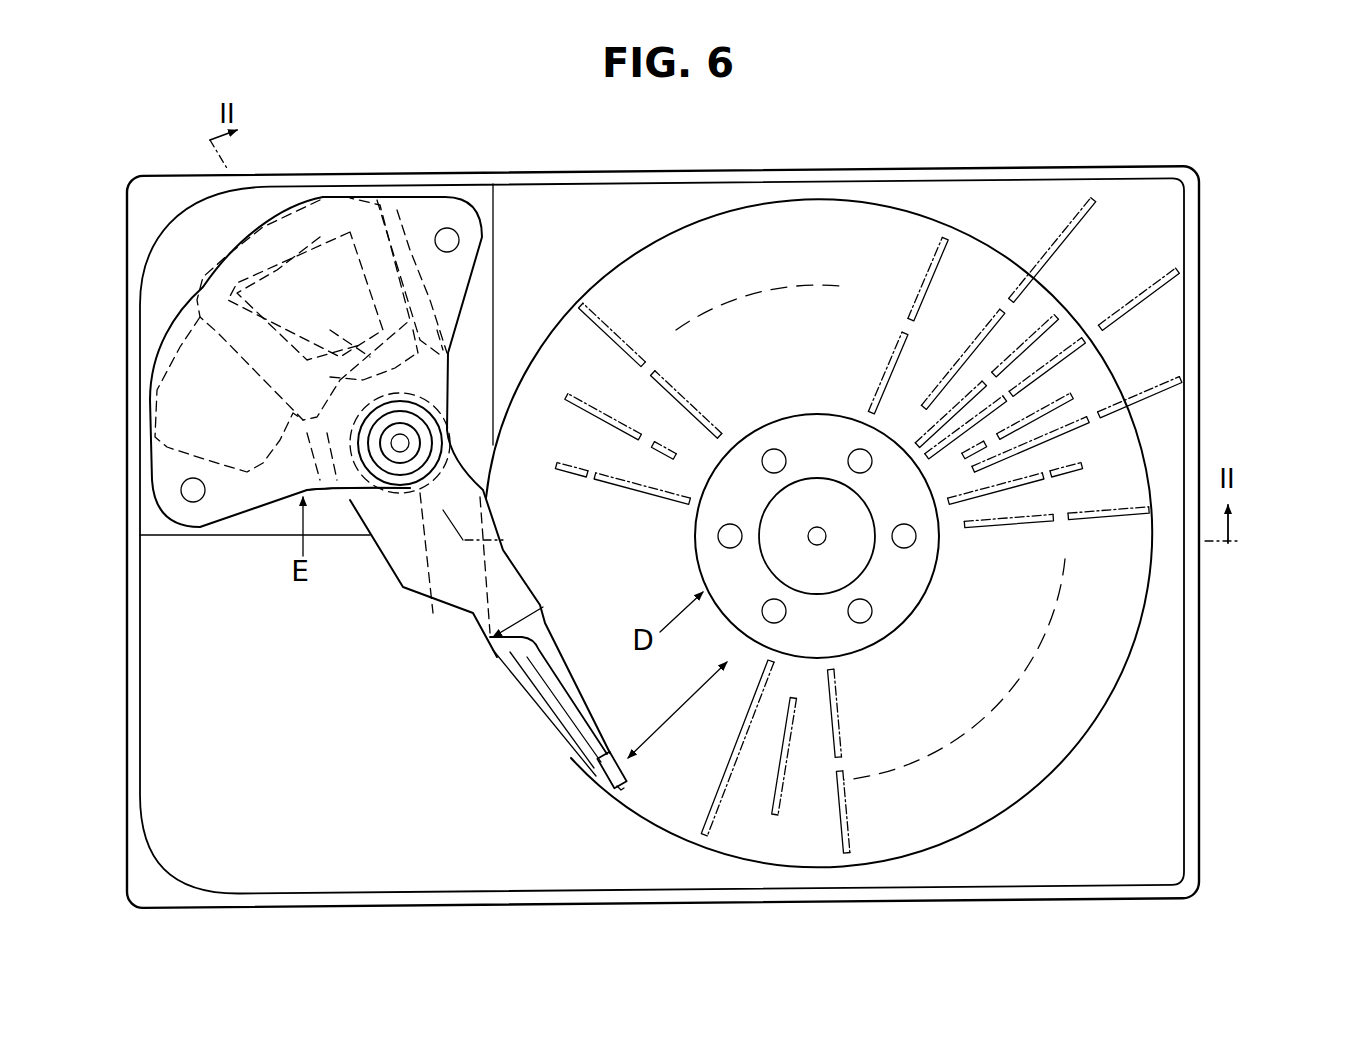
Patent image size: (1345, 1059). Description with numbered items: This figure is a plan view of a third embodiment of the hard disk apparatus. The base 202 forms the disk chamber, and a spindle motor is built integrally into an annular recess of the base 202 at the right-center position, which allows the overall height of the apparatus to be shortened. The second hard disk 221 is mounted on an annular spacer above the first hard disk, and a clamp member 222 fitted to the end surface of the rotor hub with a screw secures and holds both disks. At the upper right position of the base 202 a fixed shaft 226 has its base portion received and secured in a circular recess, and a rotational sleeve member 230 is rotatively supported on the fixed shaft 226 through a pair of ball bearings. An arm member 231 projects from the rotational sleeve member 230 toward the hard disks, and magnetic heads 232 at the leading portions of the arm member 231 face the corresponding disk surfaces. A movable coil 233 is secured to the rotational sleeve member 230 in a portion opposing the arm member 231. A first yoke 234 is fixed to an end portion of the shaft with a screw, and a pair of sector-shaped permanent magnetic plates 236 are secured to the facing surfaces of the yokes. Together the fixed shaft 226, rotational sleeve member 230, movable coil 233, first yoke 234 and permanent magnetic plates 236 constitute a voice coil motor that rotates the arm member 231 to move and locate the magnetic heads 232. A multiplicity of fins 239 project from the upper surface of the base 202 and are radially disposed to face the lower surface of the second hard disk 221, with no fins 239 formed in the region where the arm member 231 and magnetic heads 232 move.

The base 202 is at (1203, 778).
The second hard disk 221 is at (1127, 585).
The clamp member 222 is at (893, 607).
The fixed shaft 226 is at (360, 492).
The rotational sleeve member 230 is at (426, 575).
The arm member 231 is at (400, 452).
The magnetic heads 232 is at (593, 783).
The movable coil 233 is at (283, 222).
The first yoke 234 is at (253, 497).
The permanent magnetic plates 236 is at (410, 200).
The fins 239 is at (873, 372).